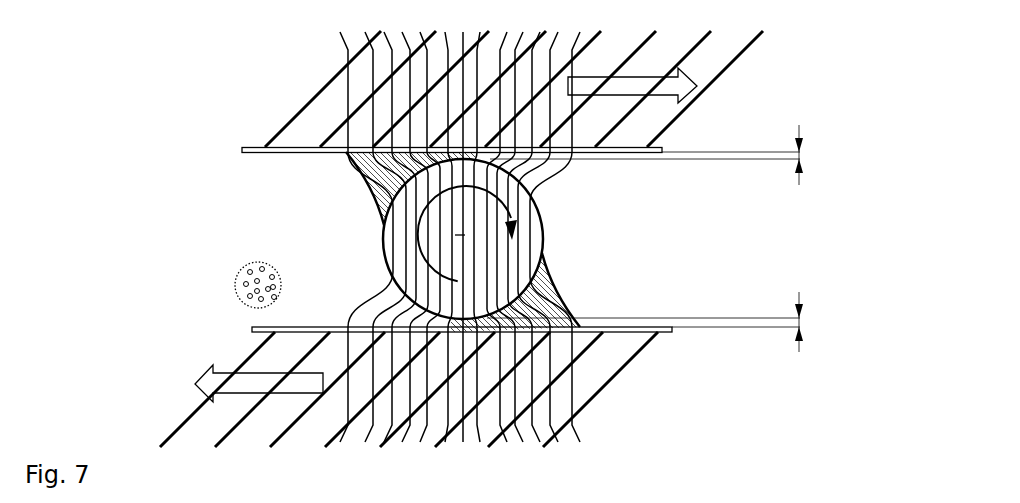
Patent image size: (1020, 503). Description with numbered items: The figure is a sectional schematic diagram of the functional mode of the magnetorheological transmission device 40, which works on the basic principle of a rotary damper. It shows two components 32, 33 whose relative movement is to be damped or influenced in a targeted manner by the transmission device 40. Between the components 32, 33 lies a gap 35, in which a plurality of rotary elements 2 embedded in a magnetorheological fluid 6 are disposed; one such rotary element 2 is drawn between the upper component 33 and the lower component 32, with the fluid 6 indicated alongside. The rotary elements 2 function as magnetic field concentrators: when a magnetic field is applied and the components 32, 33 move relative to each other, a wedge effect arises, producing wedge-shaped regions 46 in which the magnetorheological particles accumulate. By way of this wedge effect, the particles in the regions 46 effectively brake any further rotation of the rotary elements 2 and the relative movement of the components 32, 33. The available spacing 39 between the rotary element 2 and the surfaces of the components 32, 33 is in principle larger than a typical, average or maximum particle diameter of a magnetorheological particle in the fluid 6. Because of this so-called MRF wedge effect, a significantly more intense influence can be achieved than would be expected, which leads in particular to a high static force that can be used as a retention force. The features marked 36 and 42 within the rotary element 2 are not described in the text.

The magnetorheological transmission device 40 is at (200, 95).
The gap 35 is at (250, 200).
The wedge-shaped regions 46 is at (538, 308).
The rotary elements 2 is at (385, 246).
The magnetorheological fluid 6 is at (248, 282).
The rotation of particle 36 is at (537, 228).
The axis of rotation 42 is at (457, 235).
The component 33 is at (738, 42).
The component 32 is at (628, 367).
The spacing 39 is at (800, 322).